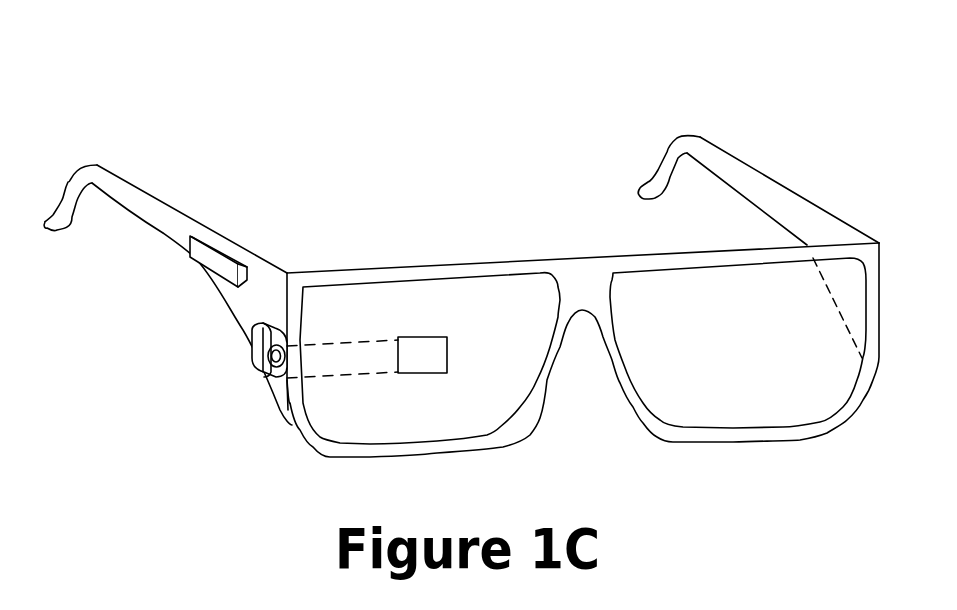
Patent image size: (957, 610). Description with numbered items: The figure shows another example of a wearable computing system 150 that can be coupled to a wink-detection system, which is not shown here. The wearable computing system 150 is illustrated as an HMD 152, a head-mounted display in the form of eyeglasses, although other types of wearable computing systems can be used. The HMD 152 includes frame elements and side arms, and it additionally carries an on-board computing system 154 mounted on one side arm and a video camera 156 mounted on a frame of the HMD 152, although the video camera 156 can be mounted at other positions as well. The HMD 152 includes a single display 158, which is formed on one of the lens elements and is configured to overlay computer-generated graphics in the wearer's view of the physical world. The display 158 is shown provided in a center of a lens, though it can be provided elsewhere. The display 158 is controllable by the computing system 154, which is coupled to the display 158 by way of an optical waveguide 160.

The wearable computing system 150 is at (461, 240).
The HMD 152 is at (778, 160).
The on-board computing system 154 is at (203, 258).
The video camera 156 is at (253, 358).
The display 158 is at (417, 373).
The optical waveguide 160 is at (340, 377).